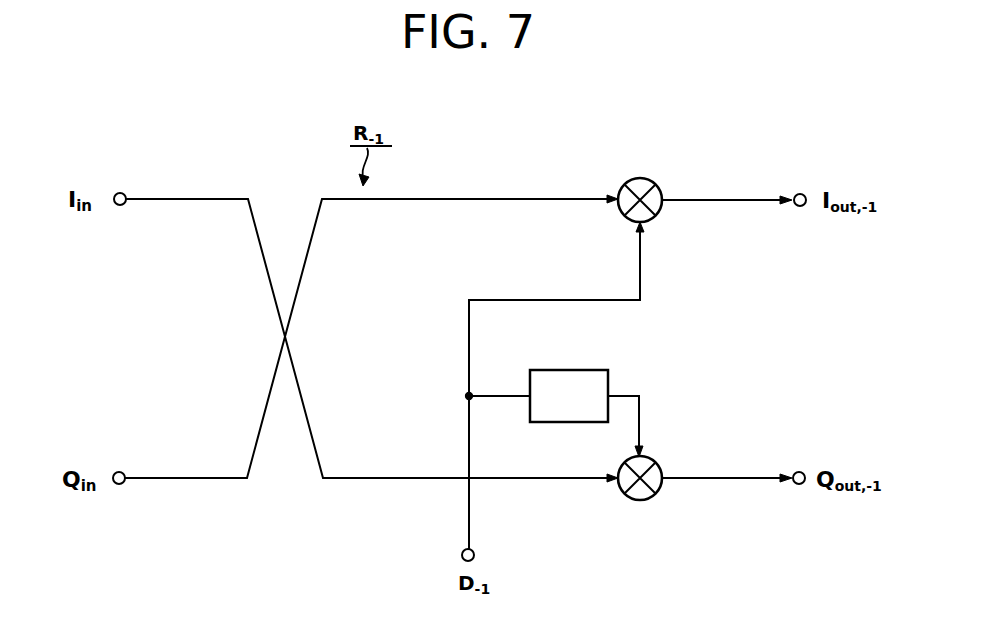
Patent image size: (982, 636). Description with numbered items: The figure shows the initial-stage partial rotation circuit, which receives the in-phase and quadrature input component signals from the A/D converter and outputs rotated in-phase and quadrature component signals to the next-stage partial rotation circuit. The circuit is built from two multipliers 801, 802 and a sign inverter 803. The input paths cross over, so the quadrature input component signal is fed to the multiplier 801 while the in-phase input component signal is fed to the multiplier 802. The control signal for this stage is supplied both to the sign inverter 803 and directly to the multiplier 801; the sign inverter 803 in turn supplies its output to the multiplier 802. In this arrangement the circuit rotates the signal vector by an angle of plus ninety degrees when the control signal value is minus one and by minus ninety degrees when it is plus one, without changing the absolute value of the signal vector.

The multiplier 801 is at (644, 178).
The multiplier 802 is at (657, 462).
The sign inverter 803 is at (592, 370).